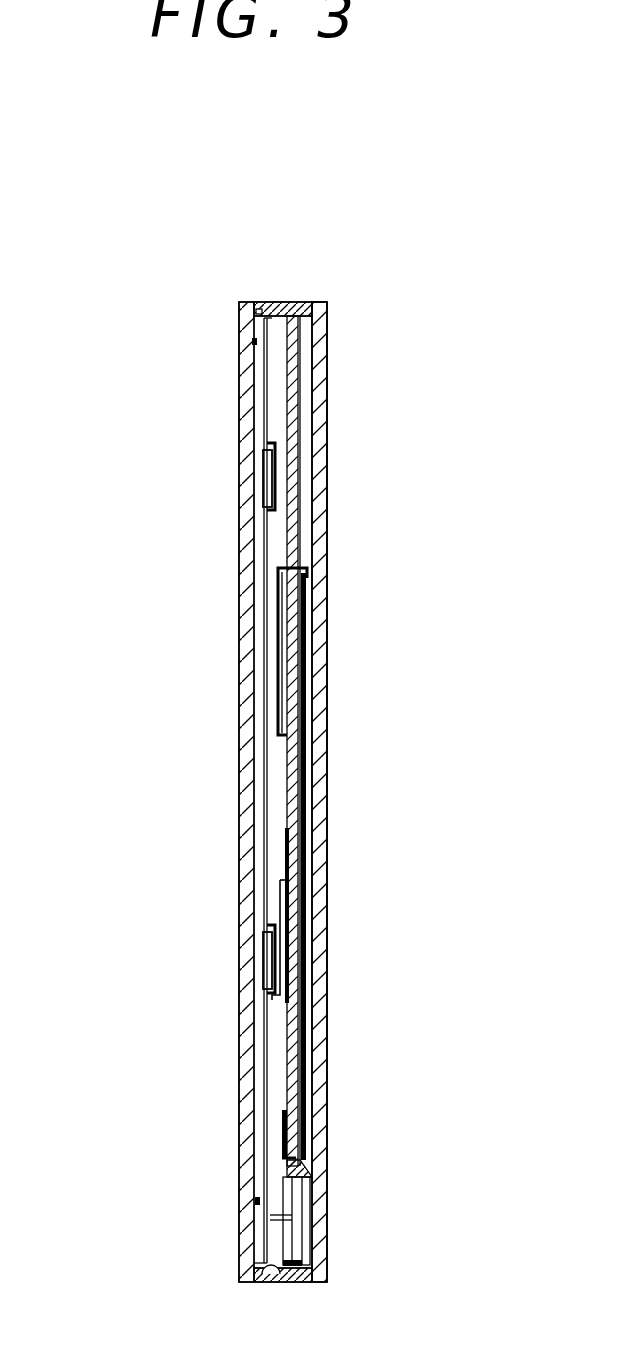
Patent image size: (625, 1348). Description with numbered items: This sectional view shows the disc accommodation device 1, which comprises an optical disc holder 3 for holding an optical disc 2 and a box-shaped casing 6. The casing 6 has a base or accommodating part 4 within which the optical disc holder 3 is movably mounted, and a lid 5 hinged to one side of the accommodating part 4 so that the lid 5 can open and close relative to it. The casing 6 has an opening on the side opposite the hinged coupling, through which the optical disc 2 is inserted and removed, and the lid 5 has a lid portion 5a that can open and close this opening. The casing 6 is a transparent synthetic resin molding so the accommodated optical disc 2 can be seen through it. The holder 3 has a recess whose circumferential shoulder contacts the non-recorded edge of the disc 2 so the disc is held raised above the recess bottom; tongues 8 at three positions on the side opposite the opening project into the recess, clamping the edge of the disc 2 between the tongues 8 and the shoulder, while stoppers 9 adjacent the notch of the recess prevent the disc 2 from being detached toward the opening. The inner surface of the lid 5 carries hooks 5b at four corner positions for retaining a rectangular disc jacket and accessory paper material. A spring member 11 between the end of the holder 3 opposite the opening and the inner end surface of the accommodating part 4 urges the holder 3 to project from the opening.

The disc accommodation device 1 is at (322, 276).
The optical disc 2 is at (283, 393).
The optical disc holder 3 is at (298, 575).
The accommodating part 4 is at (318, 474).
The lid 5 is at (243, 682).
The lid portion 5a is at (278, 300).
The hooks 5b is at (268, 469).
The box-shaped casing 6 is at (347, 1214).
The tongues 8 is at (280, 900).
The stoppers 9 is at (285, 619).
The spring member 11 is at (290, 1221).